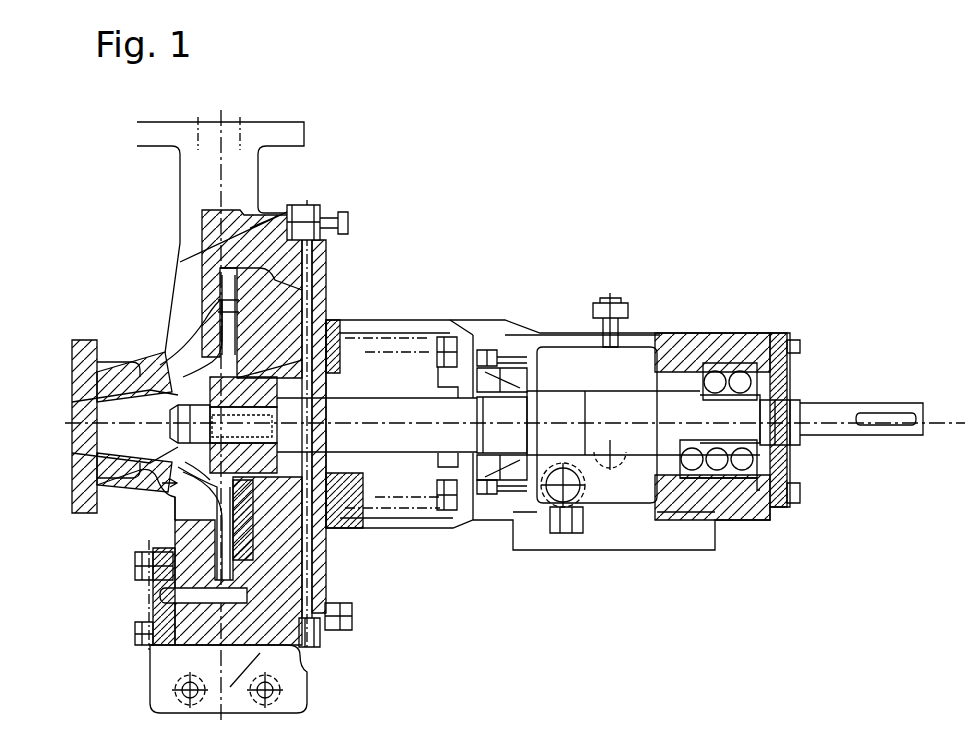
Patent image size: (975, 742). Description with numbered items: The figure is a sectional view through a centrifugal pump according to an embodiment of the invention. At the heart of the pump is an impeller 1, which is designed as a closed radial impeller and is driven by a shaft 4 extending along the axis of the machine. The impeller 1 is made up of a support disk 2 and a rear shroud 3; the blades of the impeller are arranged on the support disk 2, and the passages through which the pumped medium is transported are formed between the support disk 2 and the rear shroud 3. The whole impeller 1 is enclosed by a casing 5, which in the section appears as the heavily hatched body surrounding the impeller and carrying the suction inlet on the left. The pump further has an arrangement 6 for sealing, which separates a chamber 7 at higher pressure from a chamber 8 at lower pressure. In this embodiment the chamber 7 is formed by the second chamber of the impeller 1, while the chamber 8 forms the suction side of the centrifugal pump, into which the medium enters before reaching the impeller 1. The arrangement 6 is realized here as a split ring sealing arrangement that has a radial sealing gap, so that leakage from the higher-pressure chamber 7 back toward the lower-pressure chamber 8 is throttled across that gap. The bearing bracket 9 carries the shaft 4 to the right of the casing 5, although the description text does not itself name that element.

The impeller 1 is at (178, 350).
The support disk 2 is at (195, 295).
The rear shroud 3 is at (205, 320).
The shaft 4 is at (310, 410).
The casing 5 is at (318, 208).
The arrangement for sealing 6 is at (178, 467).
The chamber with a higher pressure 7 is at (205, 500).
The chamber with a lower pressure 8 is at (145, 440).
The bearing bracket 9 is at (563, 421).